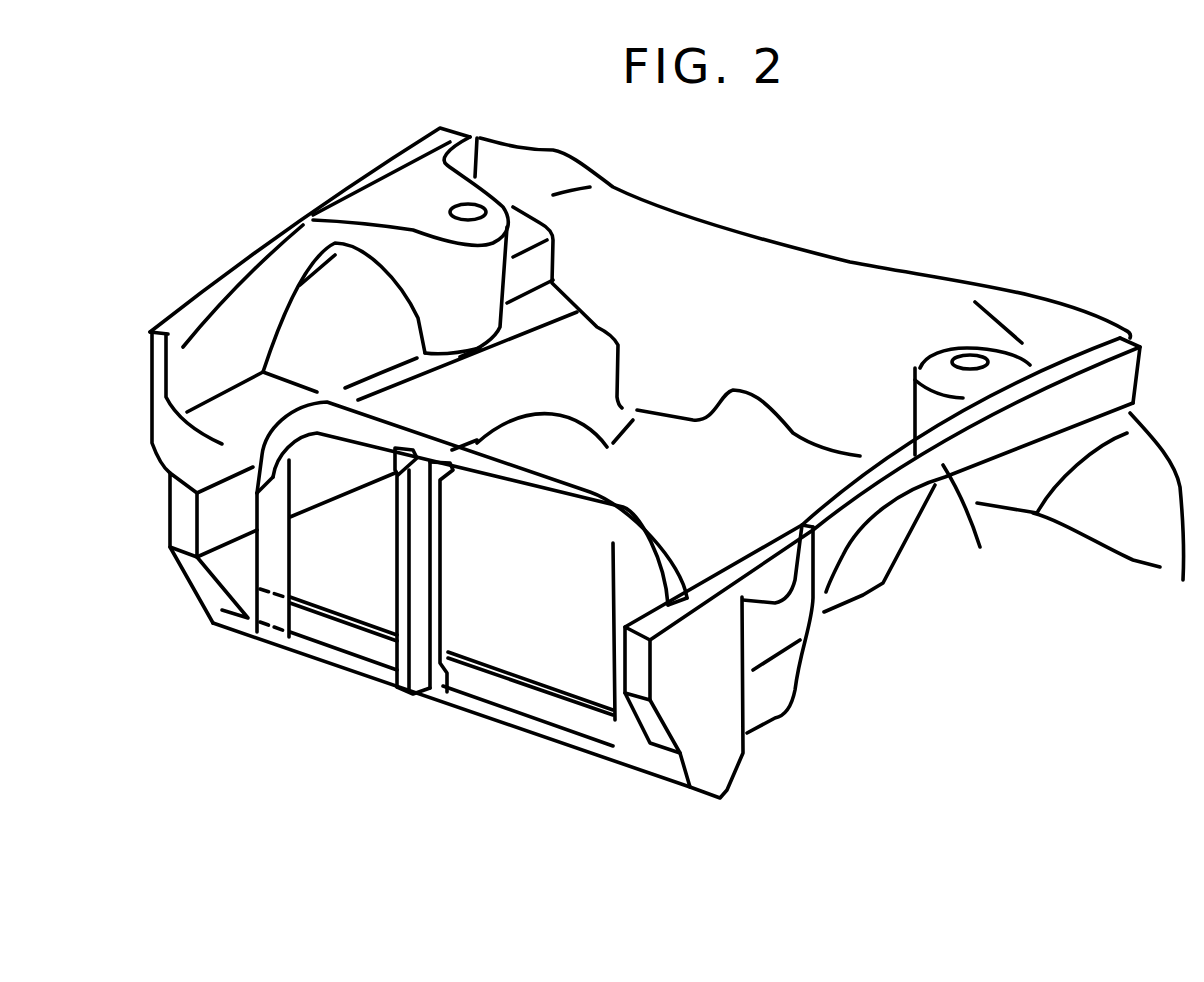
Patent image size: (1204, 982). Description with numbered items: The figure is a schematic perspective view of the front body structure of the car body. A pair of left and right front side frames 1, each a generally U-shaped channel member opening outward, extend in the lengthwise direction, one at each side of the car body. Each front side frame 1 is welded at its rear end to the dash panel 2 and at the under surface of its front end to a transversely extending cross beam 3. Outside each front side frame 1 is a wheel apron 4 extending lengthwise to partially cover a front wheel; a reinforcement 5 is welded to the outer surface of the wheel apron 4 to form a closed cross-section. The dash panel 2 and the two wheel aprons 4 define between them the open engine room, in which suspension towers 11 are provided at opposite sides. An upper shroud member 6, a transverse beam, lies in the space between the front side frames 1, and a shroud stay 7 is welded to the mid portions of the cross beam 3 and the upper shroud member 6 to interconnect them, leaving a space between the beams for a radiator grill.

The front side frame 1 is at (585, 335).
The dash panel 2 is at (857, 303).
The cross beam 3 is at (313, 650).
The wheel apron 4 is at (173, 340).
The reinforcement 5 is at (900, 577).
The upper shroud member 6 is at (580, 502).
The shroud stay 7 is at (393, 677).
The suspension tower 11 is at (407, 177).